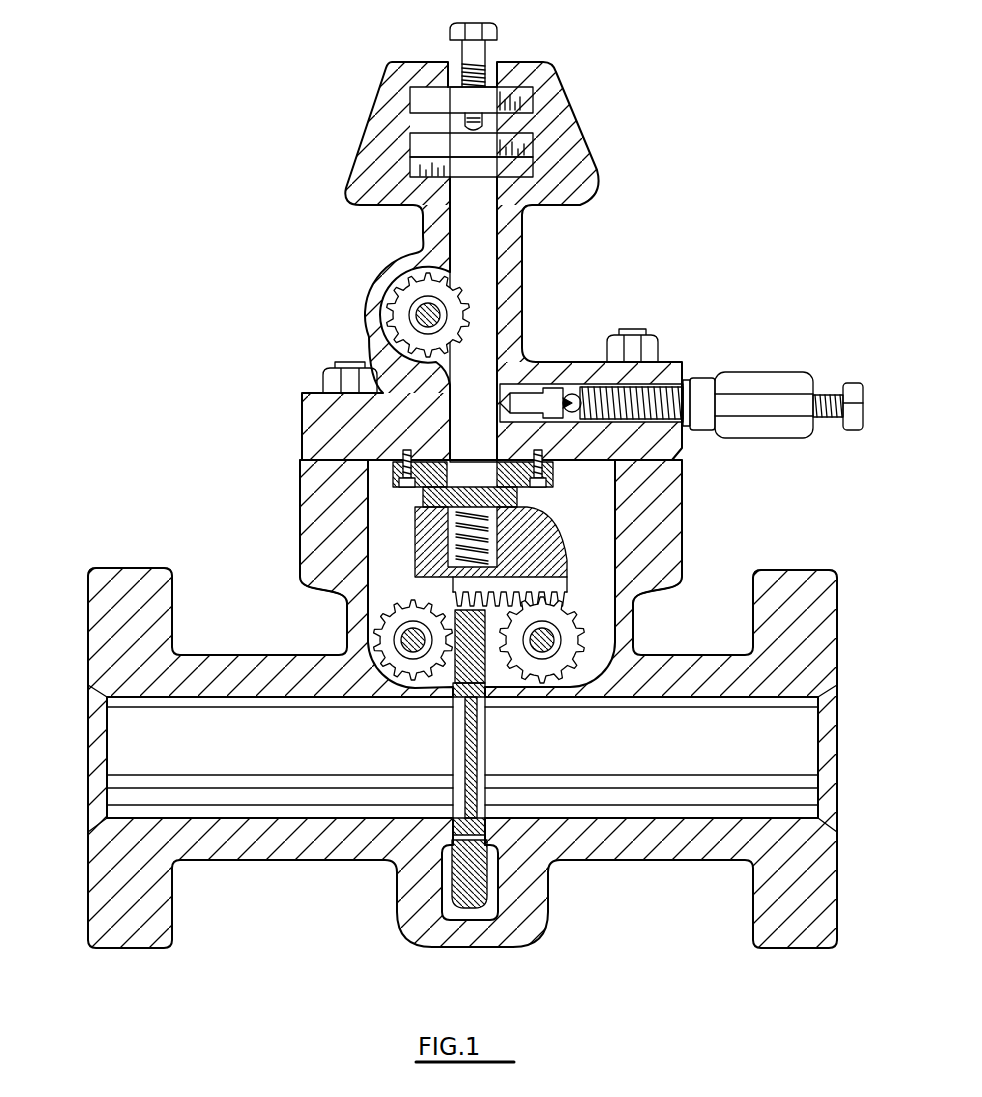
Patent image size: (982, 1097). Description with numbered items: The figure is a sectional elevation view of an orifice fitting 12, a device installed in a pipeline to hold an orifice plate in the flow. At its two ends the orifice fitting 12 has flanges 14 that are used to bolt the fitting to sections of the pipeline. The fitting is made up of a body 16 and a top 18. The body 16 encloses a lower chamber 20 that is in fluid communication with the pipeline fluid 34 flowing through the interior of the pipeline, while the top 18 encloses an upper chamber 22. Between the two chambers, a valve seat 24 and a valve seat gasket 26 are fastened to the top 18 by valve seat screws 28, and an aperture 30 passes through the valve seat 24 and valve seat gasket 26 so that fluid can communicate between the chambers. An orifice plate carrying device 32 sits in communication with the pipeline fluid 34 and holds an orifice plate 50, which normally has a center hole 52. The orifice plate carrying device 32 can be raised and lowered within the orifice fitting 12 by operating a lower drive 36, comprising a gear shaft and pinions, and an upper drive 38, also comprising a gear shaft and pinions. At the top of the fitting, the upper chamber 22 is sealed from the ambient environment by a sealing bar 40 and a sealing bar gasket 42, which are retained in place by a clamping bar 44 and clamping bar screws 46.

The orifice fitting 12 is at (822, 670).
The flanges 14 is at (122, 632).
The body 16 is at (320, 543).
The top 18 is at (505, 297).
The lower chamber 20 is at (592, 567).
The upper chamber 22 is at (482, 232).
The valve seat 24 is at (518, 496).
The valve seat gasket 26 is at (545, 476).
The valve seat screws 28 is at (538, 466).
The aperture 30 is at (437, 478).
The orifice plate carrying device 32 is at (486, 892).
The pipeline fluid 34 is at (362, 756).
The lower drive 36 is at (375, 632).
The upper drive 38 is at (368, 290).
The sealing bar 40 is at (520, 140).
The sealing bar gasket 42 is at (520, 163).
The clamping bar 44 is at (507, 96).
The clamping bar screws 46 is at (485, 24).
The orifice plate 50 is at (468, 773).
The center hole 52 is at (478, 740).